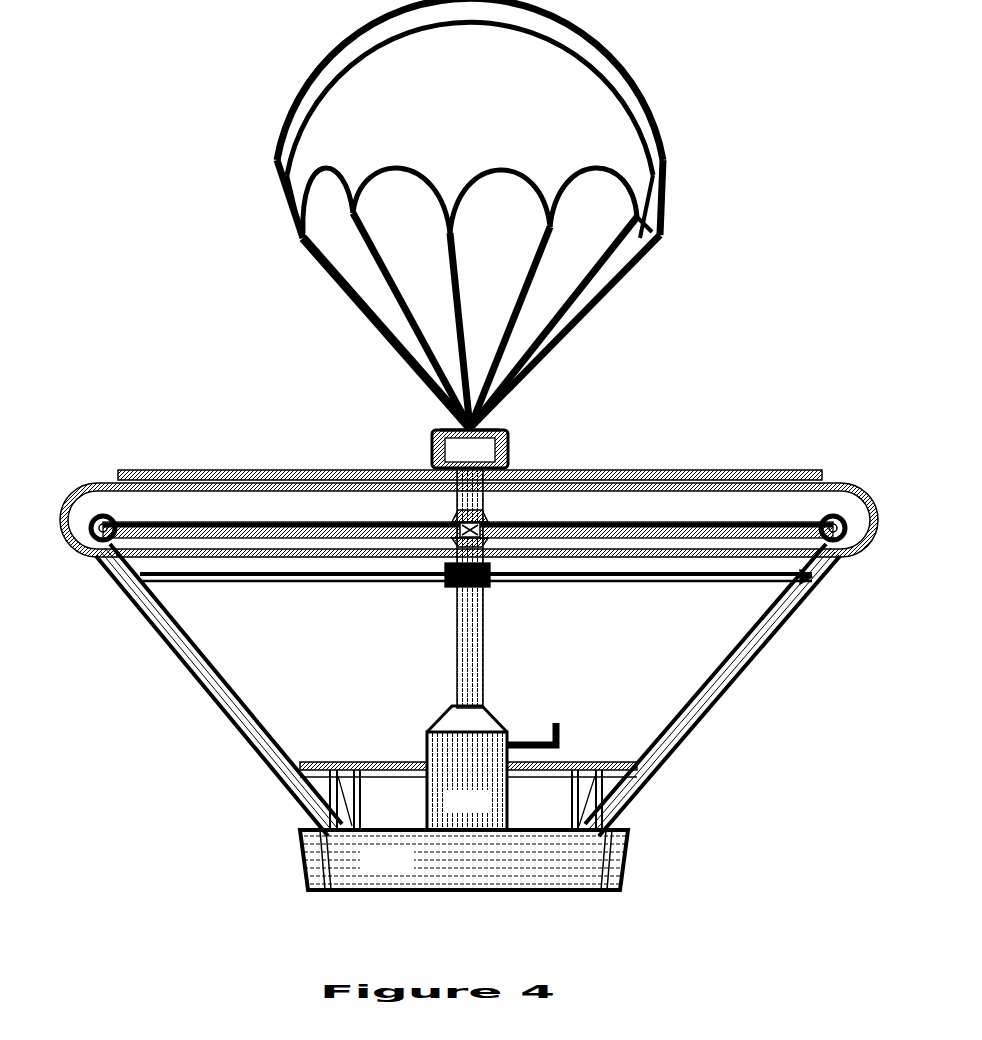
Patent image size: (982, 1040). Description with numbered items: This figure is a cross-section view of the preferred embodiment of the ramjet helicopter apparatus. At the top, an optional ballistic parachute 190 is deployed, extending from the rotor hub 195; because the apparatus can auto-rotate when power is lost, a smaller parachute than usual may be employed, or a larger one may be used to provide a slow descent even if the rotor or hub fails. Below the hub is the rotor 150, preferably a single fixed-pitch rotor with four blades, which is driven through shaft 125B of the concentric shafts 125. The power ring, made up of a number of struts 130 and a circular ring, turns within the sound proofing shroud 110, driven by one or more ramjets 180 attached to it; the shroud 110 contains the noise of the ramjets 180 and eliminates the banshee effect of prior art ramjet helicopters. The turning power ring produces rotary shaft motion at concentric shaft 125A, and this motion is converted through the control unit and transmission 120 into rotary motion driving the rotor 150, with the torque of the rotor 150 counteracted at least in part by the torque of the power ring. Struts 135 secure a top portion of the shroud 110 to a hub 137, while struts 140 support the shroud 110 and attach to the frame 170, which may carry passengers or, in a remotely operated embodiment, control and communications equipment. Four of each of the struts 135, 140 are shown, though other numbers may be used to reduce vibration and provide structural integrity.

The ballistic parachute 190 is at (470, 214).
The rotor hub 195 is at (436, 436).
The ramjet 180 is at (108, 516).
The rotor 150 is at (206, 466).
The sound proofing shroud 110 is at (79, 556).
The strut 130 is at (342, 520).
The strut 135 is at (292, 590).
The hub 137 is at (440, 584).
The concentric shafts 125 is at (452, 676).
The concentric shaft 125A is at (487, 560).
The shaft 125B is at (484, 497).
The control unit and transmission 120 is at (491, 768).
The frame 170 is at (464, 860).
The strut 140 is at (188, 668).